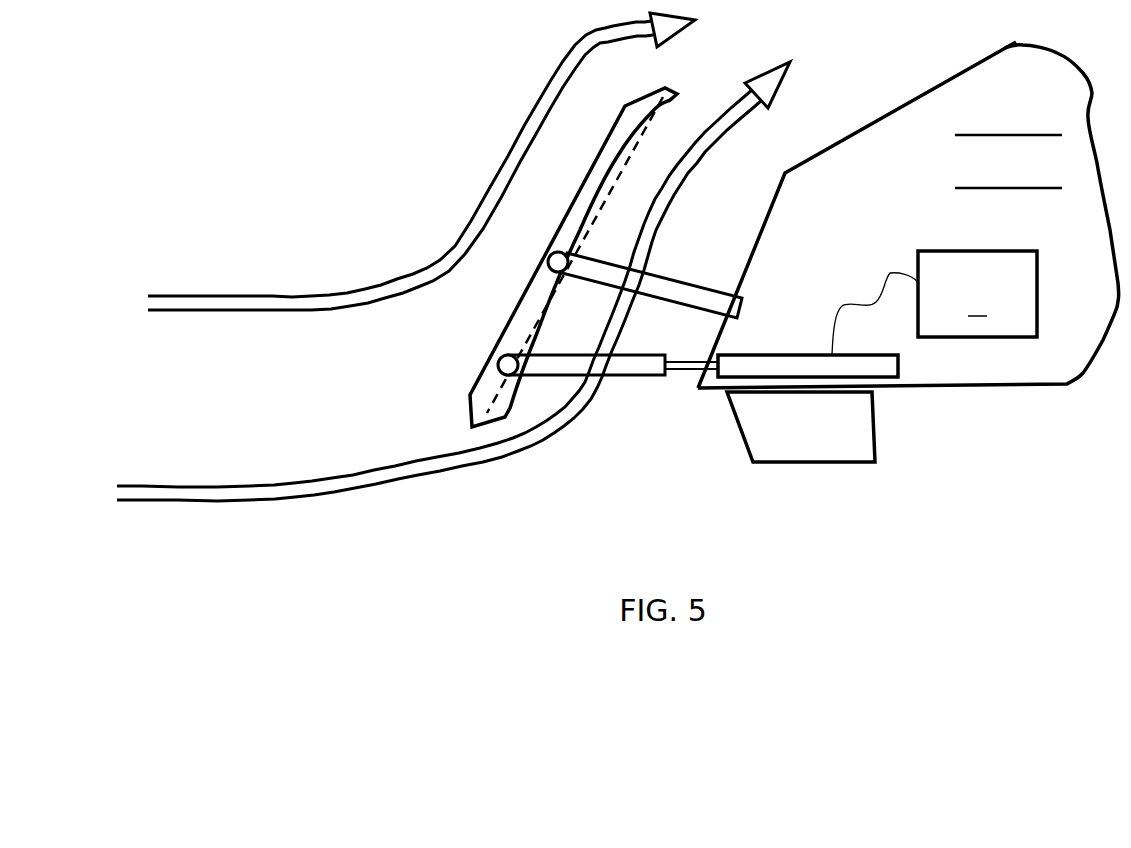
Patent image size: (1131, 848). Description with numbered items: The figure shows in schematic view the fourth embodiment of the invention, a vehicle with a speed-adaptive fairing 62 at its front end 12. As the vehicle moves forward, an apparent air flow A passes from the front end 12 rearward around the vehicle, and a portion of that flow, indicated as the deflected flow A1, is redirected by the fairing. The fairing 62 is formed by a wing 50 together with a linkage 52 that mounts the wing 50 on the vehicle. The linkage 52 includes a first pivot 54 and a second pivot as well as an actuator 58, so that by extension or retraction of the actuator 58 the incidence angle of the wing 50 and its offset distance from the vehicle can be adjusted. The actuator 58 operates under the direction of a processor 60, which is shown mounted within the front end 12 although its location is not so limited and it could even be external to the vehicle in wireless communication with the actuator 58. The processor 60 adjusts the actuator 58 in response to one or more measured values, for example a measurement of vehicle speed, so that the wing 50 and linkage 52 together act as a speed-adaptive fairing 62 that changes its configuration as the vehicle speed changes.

The front end 12 is at (828, 229).
The wing 50 is at (572, 232).
The linkage 52 is at (492, 361).
The first pivot 54 is at (548, 258).
The actuator 58 is at (796, 368).
The processor 60 is at (934, 303).
The speed-adaptive fairing 62 is at (408, 224).
The air flow A is at (507, 149).
The air flow path A1 is at (345, 486).